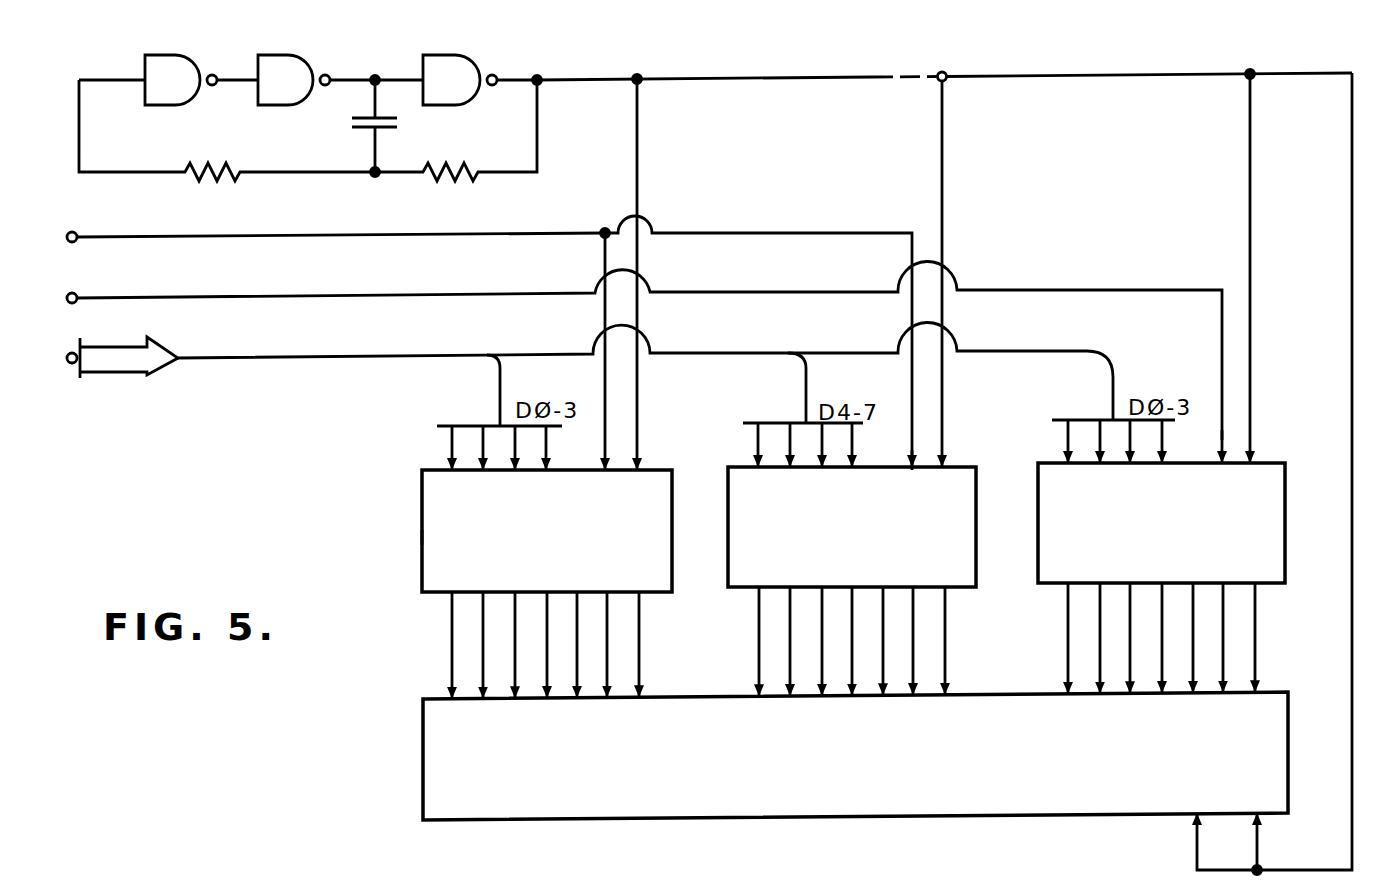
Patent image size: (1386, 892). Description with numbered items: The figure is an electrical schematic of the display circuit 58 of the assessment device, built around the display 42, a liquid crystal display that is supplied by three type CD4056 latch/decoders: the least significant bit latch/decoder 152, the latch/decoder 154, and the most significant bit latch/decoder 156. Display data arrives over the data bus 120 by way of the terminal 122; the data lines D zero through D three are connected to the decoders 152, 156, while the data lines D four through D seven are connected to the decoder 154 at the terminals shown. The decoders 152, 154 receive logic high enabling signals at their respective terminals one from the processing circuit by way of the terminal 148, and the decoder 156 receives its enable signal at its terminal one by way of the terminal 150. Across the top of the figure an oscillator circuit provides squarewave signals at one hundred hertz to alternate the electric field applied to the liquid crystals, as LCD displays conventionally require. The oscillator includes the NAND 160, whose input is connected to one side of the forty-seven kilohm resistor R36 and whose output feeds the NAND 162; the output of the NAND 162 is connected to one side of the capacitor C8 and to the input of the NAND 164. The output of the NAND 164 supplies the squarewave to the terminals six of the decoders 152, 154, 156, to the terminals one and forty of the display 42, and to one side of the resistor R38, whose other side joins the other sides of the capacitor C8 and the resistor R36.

The NAND 160 is at (203, 43).
The NAND 162 is at (283, 56).
The NAND 164 is at (455, 53).
The capacitor C8 is at (355, 126).
The resistor R36 is at (227, 130).
The resistor R38 is at (456, 130).
The terminal 148 is at (76, 232).
The terminal 150 is at (76, 293).
The terminal 122 is at (68, 354).
The data bus 120 is at (318, 360).
The least significant bit latch/decoder 152 is at (422, 497).
The latch/decoder 154 is at (728, 493).
The most significant bit latch/decoder 156 is at (1038, 487).
The display circuit 58 is at (368, 535).
The display 42 is at (423, 760).